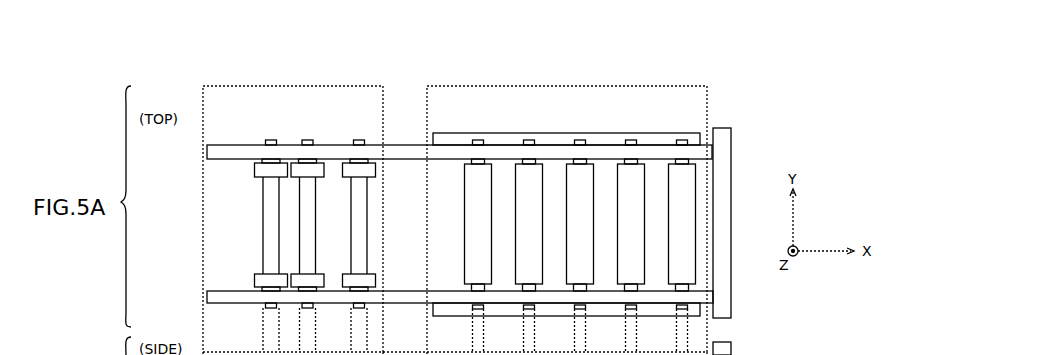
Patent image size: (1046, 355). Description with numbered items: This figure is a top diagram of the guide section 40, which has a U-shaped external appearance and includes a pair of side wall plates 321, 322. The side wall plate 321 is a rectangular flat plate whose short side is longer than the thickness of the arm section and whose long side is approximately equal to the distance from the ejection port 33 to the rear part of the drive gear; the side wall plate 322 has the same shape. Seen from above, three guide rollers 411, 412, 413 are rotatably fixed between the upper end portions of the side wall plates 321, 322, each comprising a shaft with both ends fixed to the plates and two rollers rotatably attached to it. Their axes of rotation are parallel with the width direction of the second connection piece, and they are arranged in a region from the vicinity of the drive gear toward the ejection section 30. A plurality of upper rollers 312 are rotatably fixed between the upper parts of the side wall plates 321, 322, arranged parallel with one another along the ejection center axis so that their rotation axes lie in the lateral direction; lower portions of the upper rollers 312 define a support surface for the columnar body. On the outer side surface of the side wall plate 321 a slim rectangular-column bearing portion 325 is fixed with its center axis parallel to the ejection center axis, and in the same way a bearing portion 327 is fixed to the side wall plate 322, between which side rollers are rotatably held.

The ejection section 30 is at (493, 86).
The guide section 40 is at (360, 86).
The ejection port 33 is at (731, 197).
The upper rollers 312 is at (464, 238).
The side wall plate 321 is at (244, 305).
The side wall plate 322 is at (250, 143).
The bearing portion 325 is at (457, 318).
The bearing portion 327 is at (438, 132).
The guide roller 411 is at (263, 233).
The guide roller 412 is at (315, 232).
The guide roller 413 is at (367, 225).